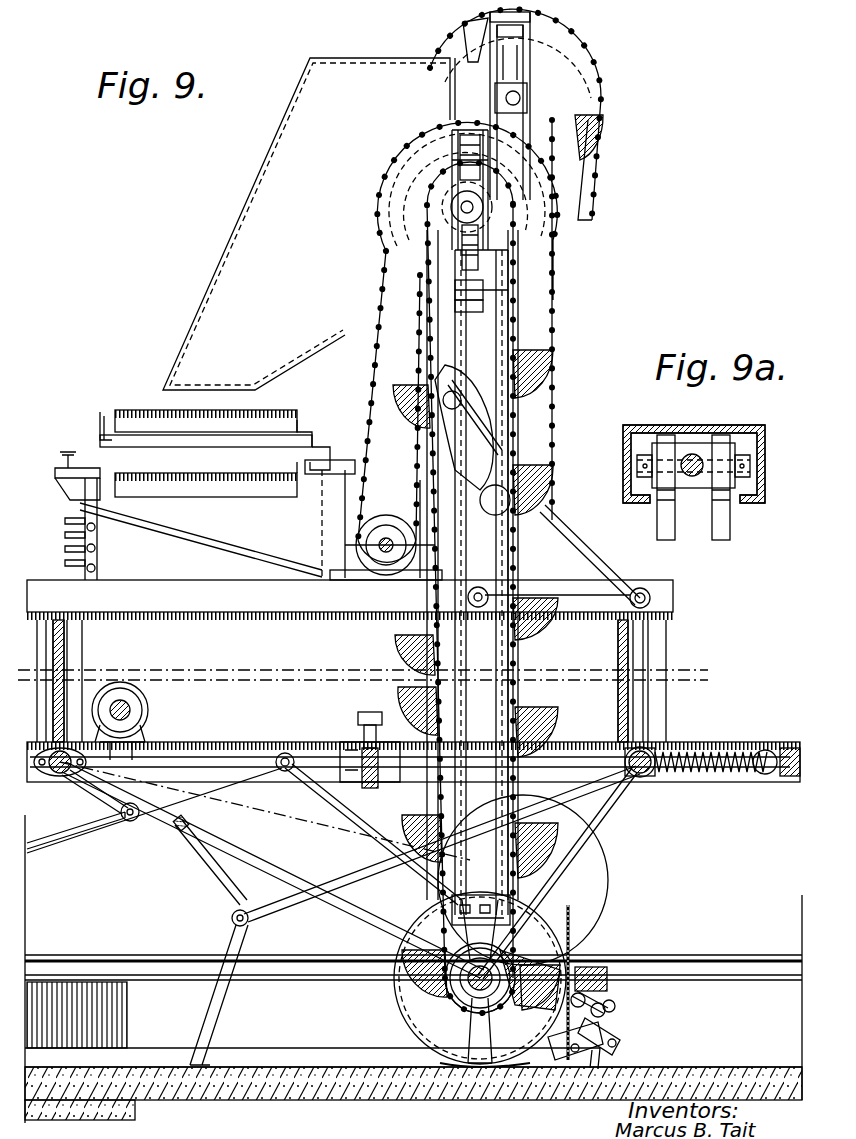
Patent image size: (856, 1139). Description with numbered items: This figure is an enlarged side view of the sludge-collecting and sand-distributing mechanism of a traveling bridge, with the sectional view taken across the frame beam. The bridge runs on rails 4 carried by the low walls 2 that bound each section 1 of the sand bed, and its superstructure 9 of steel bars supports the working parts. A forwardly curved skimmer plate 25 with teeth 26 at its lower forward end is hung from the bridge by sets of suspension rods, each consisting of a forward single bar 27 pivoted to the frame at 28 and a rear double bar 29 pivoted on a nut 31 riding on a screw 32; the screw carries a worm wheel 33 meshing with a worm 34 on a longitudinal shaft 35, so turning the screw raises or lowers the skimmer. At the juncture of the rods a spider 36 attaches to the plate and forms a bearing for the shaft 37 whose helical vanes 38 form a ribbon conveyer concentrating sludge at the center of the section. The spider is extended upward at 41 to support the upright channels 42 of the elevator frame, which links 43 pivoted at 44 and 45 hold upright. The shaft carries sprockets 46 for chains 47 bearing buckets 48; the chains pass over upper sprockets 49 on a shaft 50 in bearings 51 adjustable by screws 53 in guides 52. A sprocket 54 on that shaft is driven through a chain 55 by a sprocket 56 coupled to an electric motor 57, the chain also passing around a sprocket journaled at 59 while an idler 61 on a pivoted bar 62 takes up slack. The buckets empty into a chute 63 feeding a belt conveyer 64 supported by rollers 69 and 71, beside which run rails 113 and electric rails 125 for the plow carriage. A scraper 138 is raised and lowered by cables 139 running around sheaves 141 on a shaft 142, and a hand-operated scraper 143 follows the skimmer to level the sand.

In FIG. 9, the sand bed section 1 is at (245, 1107).
In FIG. 9, the low wall 2 is at (282, 1019).
In FIG. 9, the rail 4 is at (345, 962).
In FIG. 9, the superstructure 9 is at (82, 645).
In FIG. 9A, the superstructure 9 is at (752, 427).
In FIG. 9, the forwardly curved plate 25 is at (575, 955).
In FIG. 9, the teeth 26 is at (430, 1070).
In FIG. 9, the forward single bar 27 is at (340, 895).
In FIG. 9, the pivot 28 is at (60, 775).
In FIG. 9, the rear double bar 29 is at (560, 860).
In FIG. 9A, the rear double bar 29 is at (675, 530).
In FIG. 9A, the nut 31 is at (675, 480).
In FIG. 9, the screw 32 is at (690, 760).
In FIG. 9A, the screw 32 is at (700, 462).
In FIG. 9, the worm wheel 33 is at (370, 780).
In FIG. 9, the worm 34 is at (378, 724).
In FIG. 9, the shaft 35 is at (362, 735).
In FIG. 9, the spider 36 is at (470, 1000).
In FIG. 9, the shaft 37 is at (500, 1005).
In FIG. 9, the helical vane 38 is at (410, 1030).
In FIG. 9, the upward extension 41 is at (440, 920).
In FIG. 9, the upright channel 42 is at (453, 360).
In FIG. 9, the link 43 is at (590, 540).
In FIG. 9, the pivot connection 44 is at (478, 607).
In FIG. 9, the pivot connection 45 is at (645, 588).
In FIG. 9, the sprocket 46 is at (450, 1000).
In FIG. 9, the chain 47 is at (560, 70).
In FIG. 9, the bucket 48 is at (602, 120).
In FIG. 9, the sprocket 49 is at (455, 245).
In FIG. 9, the shaft 50 is at (527, 98).
In FIG. 9, the bearing 51 is at (450, 290).
In FIG. 9, the upright guide 52 is at (528, 40).
In FIG. 9, the screw 53 is at (450, 305).
In FIG. 9, the sprocket 54 is at (455, 200).
In FIG. 9, the sprocket chain 55 is at (372, 360).
In FIG. 9, the sprocket 56 is at (365, 575).
In FIG. 9, the electric motor 57 is at (386, 512).
In FIG. 9, the journal 59 is at (460, 420).
In FIG. 9, the idler sprocket 61 is at (505, 490).
In FIG. 9, the bar 62 is at (500, 470).
In FIG. 9, the chute 63 is at (262, 162).
In FIG. 9, the belt conveyer 64 is at (150, 403).
In FIG. 9, the roller 69 is at (108, 414).
In FIG. 9, the roller 71 is at (215, 505).
In FIG. 9, the rail 113 is at (322, 420).
In FIG. 9, the electric rail 125 is at (52, 568).
In FIG. 9, the scraper 138 is at (50, 835).
In FIG. 9, the cable 139 is at (188, 858).
In FIG. 9, the sheave 141 is at (130, 700).
In FIG. 9, the shaft 142 is at (132, 708).
In FIG. 9, the scraper 143 is at (610, 1060).